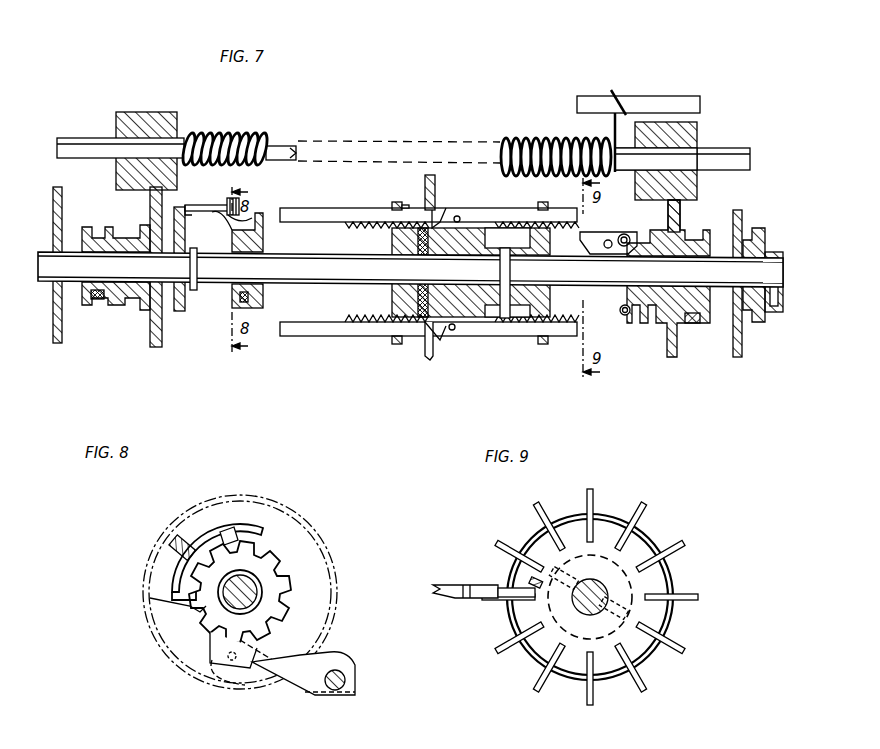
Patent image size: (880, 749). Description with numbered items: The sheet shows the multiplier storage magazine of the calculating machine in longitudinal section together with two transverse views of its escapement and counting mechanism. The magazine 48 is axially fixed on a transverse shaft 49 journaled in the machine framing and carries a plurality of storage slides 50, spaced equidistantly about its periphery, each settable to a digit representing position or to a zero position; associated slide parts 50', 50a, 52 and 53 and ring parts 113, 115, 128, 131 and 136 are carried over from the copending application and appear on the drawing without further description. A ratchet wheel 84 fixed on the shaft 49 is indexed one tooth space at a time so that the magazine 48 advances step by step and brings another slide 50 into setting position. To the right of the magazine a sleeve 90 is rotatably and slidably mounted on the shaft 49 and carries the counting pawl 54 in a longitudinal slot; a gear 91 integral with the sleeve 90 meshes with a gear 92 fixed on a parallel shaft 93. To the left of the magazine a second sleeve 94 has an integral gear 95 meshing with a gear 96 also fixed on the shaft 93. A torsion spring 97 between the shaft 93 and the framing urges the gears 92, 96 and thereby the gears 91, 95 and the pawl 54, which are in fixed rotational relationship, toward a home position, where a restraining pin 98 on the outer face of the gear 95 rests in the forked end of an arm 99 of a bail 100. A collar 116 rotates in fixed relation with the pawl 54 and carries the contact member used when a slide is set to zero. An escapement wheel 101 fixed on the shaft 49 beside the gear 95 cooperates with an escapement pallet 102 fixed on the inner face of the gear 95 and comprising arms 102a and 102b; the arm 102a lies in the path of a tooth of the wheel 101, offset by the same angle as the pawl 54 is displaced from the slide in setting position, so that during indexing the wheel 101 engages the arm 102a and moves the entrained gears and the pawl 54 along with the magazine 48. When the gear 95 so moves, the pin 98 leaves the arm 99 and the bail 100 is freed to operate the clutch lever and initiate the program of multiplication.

In FIG. 7, the storage magazine 48 is at (418, 342).
In FIG. 9, the storage magazine 48 is at (614, 504).
In FIG. 7, the shaft 49 is at (220, 285).
In FIG. 8, the shaft 49 is at (262, 592).
In FIG. 9, the shaft 49 is at (602, 608).
In FIG. 7, the storage slide 50 is at (429, 274).
In FIG. 9, the storage slide 50 is at (594, 597).
In FIG. 7, the part of storage slide 50' is at (451, 276).
In FIG. 7, the pin 50a is at (460, 218).
In FIG. 7, the part from copending application 52 is at (395, 340).
In FIG. 9, the part from copending application 52 is at (658, 555).
In FIG. 7, the spring 53 is at (428, 352).
In FIG. 7, the counting pawl 54 is at (596, 232).
In FIG. 9, the counting pawl 54 is at (545, 586).
In FIG. 7, the ratchet wheel 84 is at (745, 330).
In FIG. 7, the sleeve 90 is at (645, 318).
In FIG. 7, the gear 91 is at (680, 215).
In FIG. 7, the gear 92 is at (705, 130).
In FIG. 7, the shaft 93 is at (75, 140).
In FIG. 7, the second sleeve 94 is at (130, 305).
In FIG. 7, the gear 95 is at (152, 347).
In FIG. 8, the gear 95 is at (338, 614).
In FIG. 7, the gear 96 is at (133, 125).
In FIG. 7, the torsion spring 97 is at (545, 138).
In FIG. 8, the restraining pin 98 is at (232, 668).
In FIG. 8, the arm 99 is at (290, 700).
In FIG. 8, the bail 100 is at (340, 695).
In FIG. 7, the escapement wheel 101 is at (178, 312).
In FIG. 8, the escapement wheel 101 is at (200, 610).
In FIG. 8, the escapement pallet 102 is at (195, 538).
In FIG. 7, the pallet arm 102a is at (185, 212).
In FIG. 8, the pallet arm 102a is at (230, 530).
In FIG. 8, the pallet arm 102b is at (172, 596).
In FIG. 7, the part from copending application 113 is at (690, 324).
In FIG. 7, the part from copending application 115 is at (246, 305).
In FIG. 7, the collar 116 is at (263, 297).
In FIG. 7, the part from copending application 128 is at (98, 300).
In FIG. 7, the part from copending application 131 is at (254, 185).
In FIG. 7, the part from copending application 136 is at (425, 192).